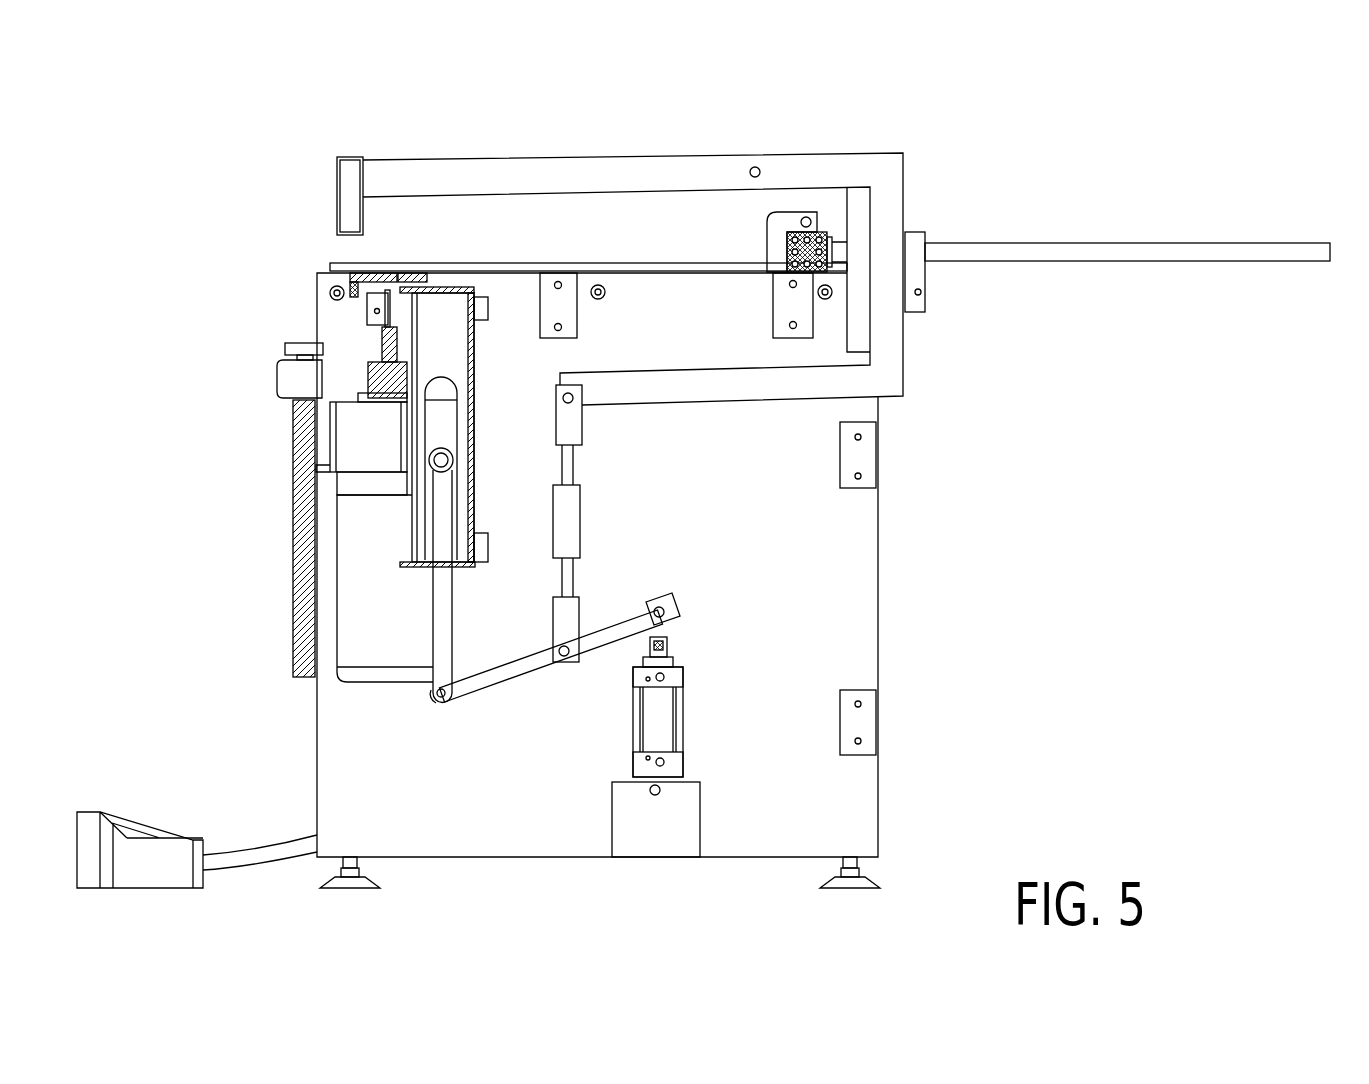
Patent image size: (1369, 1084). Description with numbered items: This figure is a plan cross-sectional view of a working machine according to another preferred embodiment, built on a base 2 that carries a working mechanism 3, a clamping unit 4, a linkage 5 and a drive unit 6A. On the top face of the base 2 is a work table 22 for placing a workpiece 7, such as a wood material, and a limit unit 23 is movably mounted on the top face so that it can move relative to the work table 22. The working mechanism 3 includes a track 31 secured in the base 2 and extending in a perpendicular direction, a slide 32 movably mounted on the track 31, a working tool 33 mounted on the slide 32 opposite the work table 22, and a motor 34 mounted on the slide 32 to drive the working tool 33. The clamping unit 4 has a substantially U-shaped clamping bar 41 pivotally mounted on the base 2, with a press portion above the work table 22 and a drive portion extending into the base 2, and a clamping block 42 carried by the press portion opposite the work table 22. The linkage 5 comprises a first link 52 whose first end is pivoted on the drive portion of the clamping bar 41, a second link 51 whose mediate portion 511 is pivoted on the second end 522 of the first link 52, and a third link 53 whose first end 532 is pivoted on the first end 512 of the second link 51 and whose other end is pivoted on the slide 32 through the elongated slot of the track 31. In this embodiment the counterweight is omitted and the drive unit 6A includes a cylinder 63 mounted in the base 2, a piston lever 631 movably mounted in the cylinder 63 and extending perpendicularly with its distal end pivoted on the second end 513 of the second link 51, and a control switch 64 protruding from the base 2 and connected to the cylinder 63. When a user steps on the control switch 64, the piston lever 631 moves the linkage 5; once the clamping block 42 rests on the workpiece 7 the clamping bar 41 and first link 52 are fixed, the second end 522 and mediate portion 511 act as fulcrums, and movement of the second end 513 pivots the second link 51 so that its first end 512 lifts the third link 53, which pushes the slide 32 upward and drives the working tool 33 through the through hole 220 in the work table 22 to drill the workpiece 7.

The base 2 is at (890, 500).
The working mechanism 3 is at (318, 453).
The clamping unit 4 is at (550, 150).
The linkage 5 is at (512, 726).
The workpiece 7 is at (490, 254).
The work table 22 is at (410, 282).
The limit unit 23 is at (803, 212).
The track 31 is at (413, 522).
The slide 32 is at (355, 422).
The working tool 33 is at (372, 315).
The motor 34 is at (350, 588).
The clamping bar 41 is at (905, 186).
The clamping block 42 is at (352, 176).
The second link 51 is at (472, 698).
The first link 52 is at (580, 533).
The third link 53 is at (413, 597).
The cylinder 63 is at (667, 733).
The control switch 64 is at (150, 882).
The through hole 220 is at (388, 275).
The mediate portion 511 is at (563, 657).
The first end 512 is at (436, 702).
The second end 513 is at (590, 630).
The second end 522 is at (576, 663).
The first end 532 is at (433, 688).
The piston lever 631 is at (668, 643).
The drive unit 6A is at (695, 698).